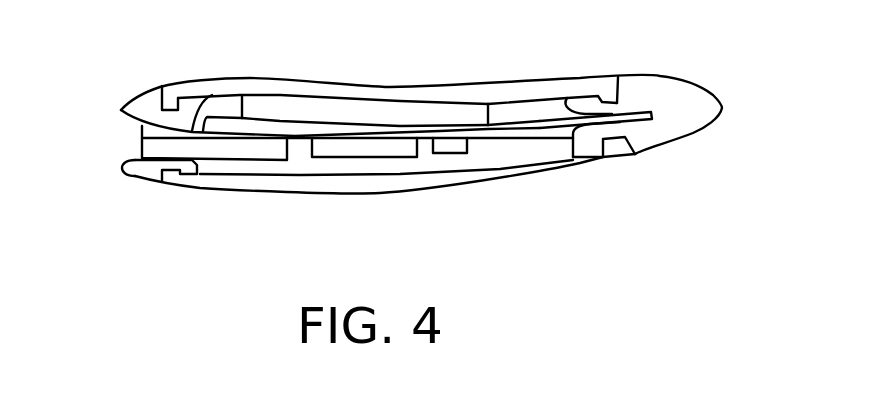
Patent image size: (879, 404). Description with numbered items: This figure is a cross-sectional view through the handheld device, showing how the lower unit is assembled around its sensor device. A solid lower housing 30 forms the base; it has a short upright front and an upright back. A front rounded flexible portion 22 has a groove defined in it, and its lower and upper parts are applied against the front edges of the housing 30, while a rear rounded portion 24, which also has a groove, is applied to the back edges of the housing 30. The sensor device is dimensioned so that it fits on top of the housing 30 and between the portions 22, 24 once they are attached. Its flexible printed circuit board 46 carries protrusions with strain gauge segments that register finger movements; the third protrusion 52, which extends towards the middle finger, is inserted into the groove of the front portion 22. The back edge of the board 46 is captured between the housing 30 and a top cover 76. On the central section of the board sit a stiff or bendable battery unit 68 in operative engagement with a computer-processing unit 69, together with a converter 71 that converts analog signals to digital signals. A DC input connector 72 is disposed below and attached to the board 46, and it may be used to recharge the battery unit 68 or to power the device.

The front rounded flexible portion 22 is at (694, 100).
The rear rounded portion 24 is at (143, 168).
The solid lower housing 30 is at (228, 183).
The flexible printed circuit board 46 is at (527, 117).
The third protrusion 52 is at (634, 110).
The battery unit 68 is at (367, 113).
The computer-processing unit 69 is at (363, 145).
The converter 71 is at (452, 143).
The DC input connector 72 is at (162, 143).
The top cover 76 is at (218, 92).